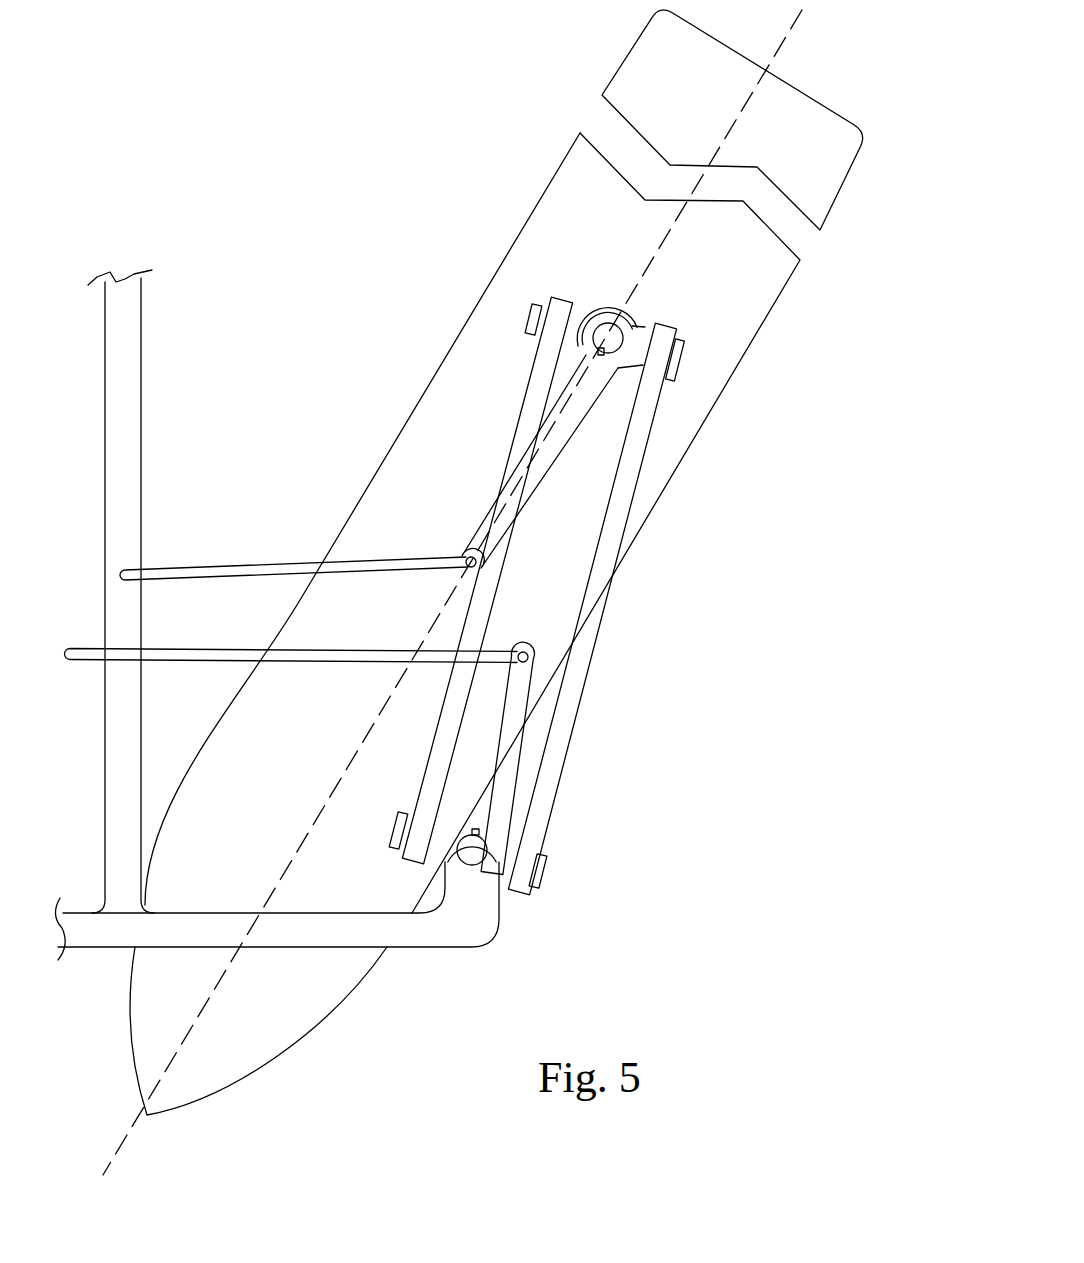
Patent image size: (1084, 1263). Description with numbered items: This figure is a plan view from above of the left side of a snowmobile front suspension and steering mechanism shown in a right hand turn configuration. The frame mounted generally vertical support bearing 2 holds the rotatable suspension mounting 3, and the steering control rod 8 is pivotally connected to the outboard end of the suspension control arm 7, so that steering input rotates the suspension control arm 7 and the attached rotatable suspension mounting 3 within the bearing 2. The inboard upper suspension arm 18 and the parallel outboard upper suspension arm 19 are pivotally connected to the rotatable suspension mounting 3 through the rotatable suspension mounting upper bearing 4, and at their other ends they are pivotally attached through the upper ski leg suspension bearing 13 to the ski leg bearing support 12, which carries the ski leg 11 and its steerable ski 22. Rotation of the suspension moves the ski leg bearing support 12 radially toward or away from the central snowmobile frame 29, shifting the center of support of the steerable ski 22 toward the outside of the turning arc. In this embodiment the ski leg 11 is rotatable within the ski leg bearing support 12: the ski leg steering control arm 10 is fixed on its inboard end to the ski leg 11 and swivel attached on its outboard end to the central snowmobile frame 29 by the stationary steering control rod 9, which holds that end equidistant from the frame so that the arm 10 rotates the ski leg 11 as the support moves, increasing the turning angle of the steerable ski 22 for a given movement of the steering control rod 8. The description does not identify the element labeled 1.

The base 1 is at (405, 938).
The frame mounted generally vertical support bearing 2 is at (497, 877).
The rotatable suspension mounting 3 is at (474, 858).
The rotatable suspension mounting upper bearing 4 is at (540, 876).
The suspension control arm 7 is at (505, 765).
The steering control rod 8 is at (215, 658).
The stationary steering control rod 9 is at (263, 563).
The ski leg steering control arm 10 is at (493, 497).
The ski leg 11 is at (608, 328).
The ski leg bearing support 12 is at (633, 315).
The upper ski leg suspension bearing 13 is at (675, 368).
The inboard upper suspension arm 18 is at (532, 398).
The outboard upper suspension arm 19 is at (606, 578).
The steerable ski 22 is at (327, 995).
The central snowmobile frame 29 is at (128, 490).